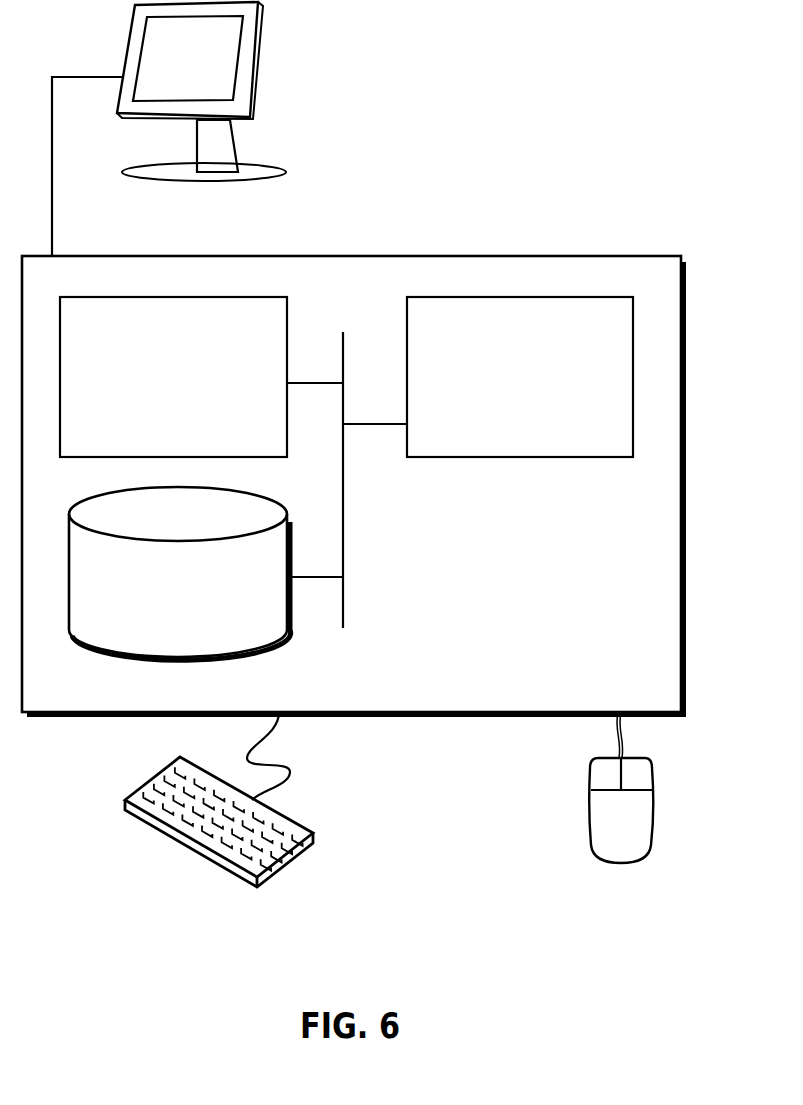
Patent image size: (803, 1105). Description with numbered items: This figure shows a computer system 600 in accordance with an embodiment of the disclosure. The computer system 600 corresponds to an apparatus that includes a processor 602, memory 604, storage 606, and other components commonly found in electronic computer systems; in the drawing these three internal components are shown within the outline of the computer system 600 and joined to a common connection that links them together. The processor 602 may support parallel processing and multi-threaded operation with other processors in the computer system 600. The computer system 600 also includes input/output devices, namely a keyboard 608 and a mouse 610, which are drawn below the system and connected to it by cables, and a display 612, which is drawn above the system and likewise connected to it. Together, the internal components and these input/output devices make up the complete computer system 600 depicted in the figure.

The computer system 600 is at (397, 233).
The processor 602 is at (545, 390).
The memory 604 is at (193, 390).
The storage 606 is at (200, 602).
The keyboard 608 is at (143, 820).
The mouse 610 is at (642, 832).
The display 612 is at (169, 129).